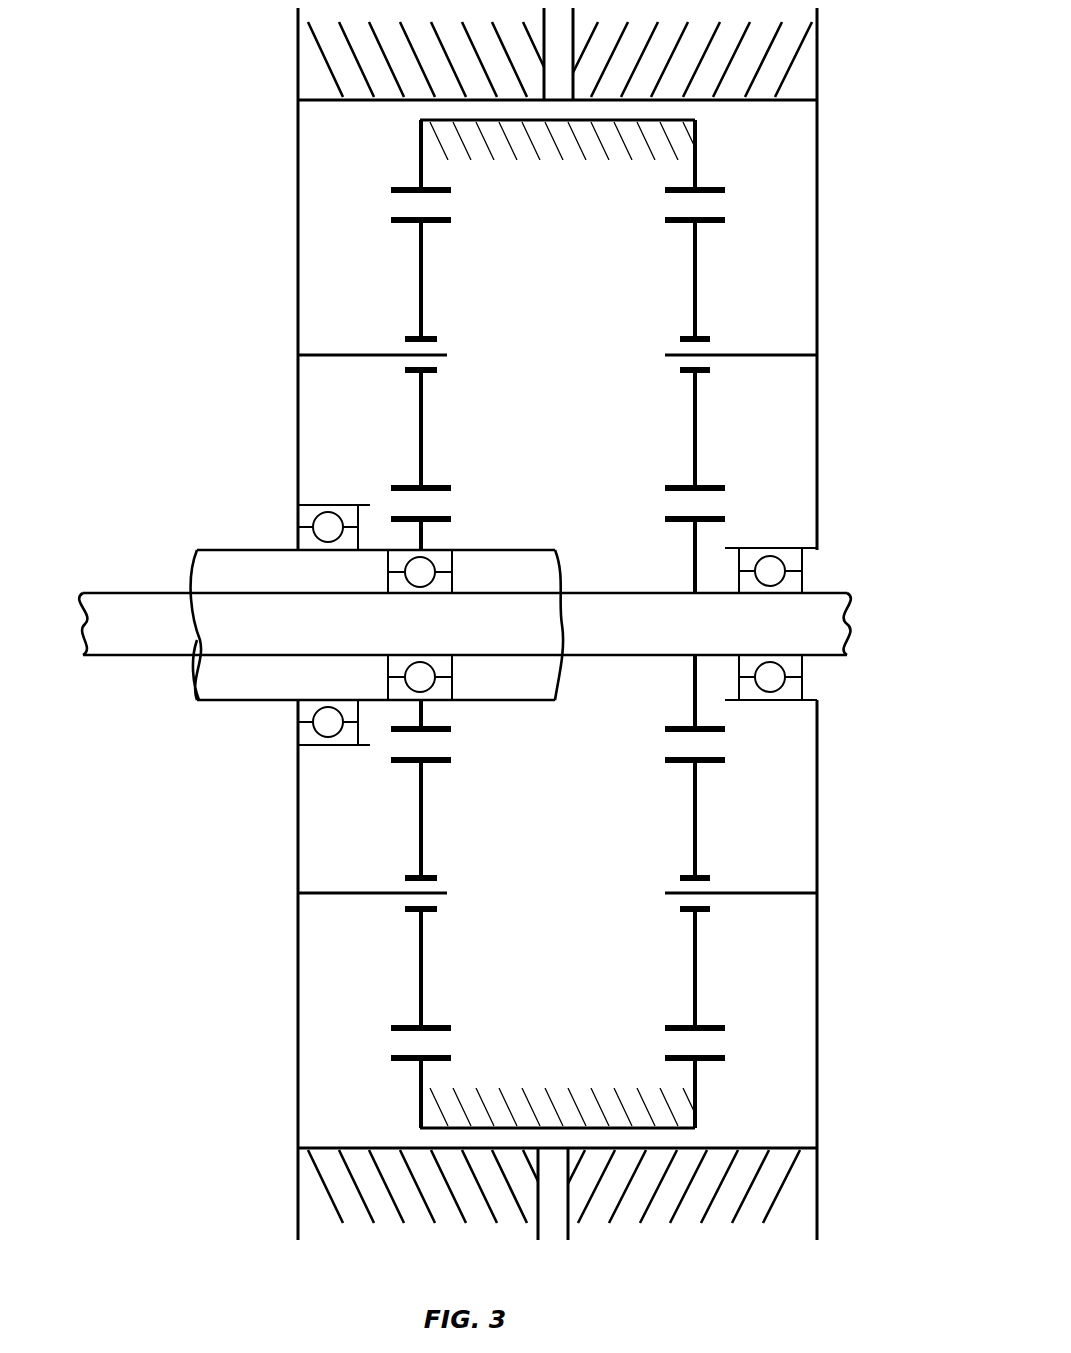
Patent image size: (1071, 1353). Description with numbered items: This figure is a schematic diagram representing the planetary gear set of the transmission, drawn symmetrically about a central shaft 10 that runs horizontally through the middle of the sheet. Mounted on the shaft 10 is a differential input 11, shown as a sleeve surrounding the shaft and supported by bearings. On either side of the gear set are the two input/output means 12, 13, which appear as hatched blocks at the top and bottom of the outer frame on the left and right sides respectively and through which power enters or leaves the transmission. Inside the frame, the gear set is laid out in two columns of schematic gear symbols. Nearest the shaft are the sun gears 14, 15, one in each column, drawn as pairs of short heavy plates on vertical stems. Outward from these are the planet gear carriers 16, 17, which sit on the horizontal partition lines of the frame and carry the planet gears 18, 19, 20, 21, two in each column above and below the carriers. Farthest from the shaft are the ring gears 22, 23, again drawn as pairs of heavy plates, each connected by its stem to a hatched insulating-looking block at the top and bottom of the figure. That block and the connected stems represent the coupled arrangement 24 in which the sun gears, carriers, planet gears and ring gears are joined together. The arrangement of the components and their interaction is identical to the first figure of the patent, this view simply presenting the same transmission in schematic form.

The shaft 10 is at (128, 608).
The differential input 11 is at (228, 562).
The input/output means 12 is at (312, 70).
The input/output means 13 is at (806, 68).
The sun gear 14 is at (422, 540).
The sun gear 15 is at (690, 540).
The planet gear carrier 16 is at (447, 355).
The planet gear carrier 17 is at (667, 355).
The planet gear 18 is at (422, 315).
The planet gear 19 is at (693, 310).
The planet gear 20 is at (419, 937).
The planet gear 21 is at (690, 933).
The ring gear 22 is at (420, 170).
The ring gear 23 is at (697, 170).
The coupled arrangement 24 is at (550, 143).